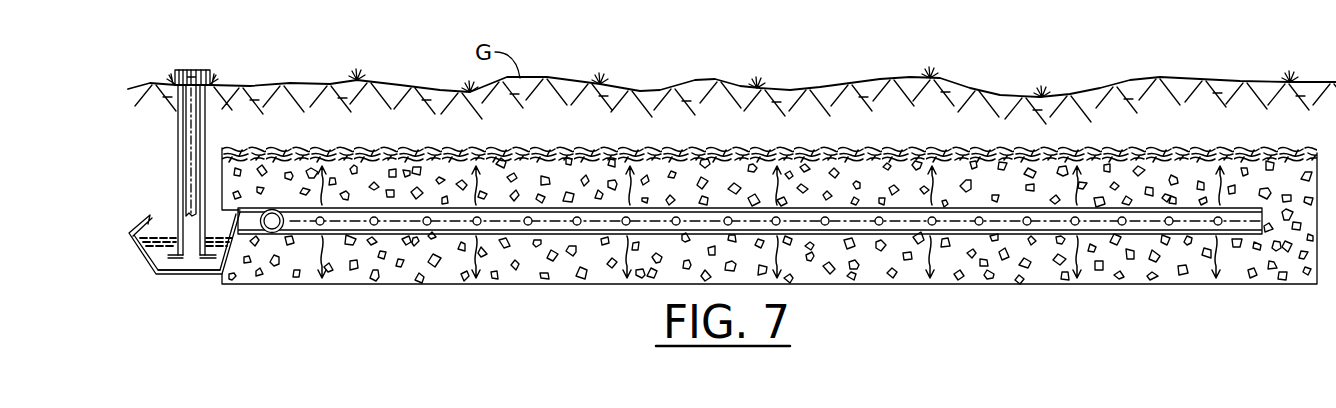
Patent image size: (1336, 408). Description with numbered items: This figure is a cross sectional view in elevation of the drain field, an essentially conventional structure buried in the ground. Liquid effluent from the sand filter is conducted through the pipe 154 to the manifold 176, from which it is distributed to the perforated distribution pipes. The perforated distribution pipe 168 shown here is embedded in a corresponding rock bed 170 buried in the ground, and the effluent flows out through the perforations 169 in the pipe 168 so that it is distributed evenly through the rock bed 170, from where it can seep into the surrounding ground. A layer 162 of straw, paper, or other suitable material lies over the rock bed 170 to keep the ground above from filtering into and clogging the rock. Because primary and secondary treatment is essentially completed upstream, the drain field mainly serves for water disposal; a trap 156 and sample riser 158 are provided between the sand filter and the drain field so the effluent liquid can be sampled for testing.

The pipe 154 is at (157, 231).
The trap 156 is at (186, 276).
The sample riser 158 is at (178, 138).
The layer 162 is at (562, 147).
The perforated distribution pipe 168 is at (862, 208).
The perforations 169 is at (676, 217).
The rock bed 170 is at (1118, 162).
The manifold 176 is at (277, 208).